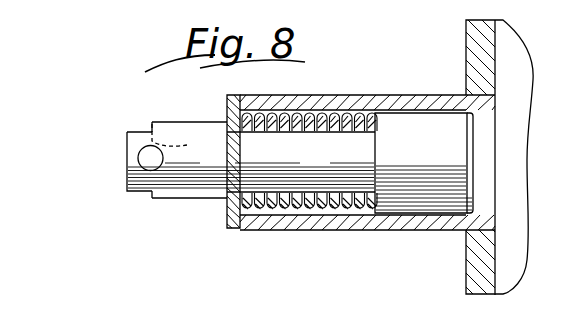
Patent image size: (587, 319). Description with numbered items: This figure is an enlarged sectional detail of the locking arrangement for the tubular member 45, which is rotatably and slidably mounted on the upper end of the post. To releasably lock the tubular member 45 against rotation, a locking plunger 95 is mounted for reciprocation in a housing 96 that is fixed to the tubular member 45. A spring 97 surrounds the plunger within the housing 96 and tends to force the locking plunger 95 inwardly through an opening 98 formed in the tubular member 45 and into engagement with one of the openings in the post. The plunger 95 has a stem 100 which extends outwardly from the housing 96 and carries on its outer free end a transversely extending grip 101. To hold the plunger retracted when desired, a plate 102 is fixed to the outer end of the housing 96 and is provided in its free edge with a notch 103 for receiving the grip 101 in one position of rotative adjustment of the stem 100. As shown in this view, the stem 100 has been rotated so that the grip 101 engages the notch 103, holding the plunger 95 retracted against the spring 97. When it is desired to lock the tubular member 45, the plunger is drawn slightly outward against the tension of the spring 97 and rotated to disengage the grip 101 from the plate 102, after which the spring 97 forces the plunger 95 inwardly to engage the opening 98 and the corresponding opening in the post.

The tubular member 45 is at (473, 42).
The locking plunger 95 is at (407, 125).
The housing 96 is at (318, 104).
The spring 97 is at (297, 120).
The opening 98 is at (483, 155).
The stem 100 is at (235, 170).
The grip 101 is at (149, 160).
The plate 102 is at (170, 123).
The notch 103 is at (184, 139).